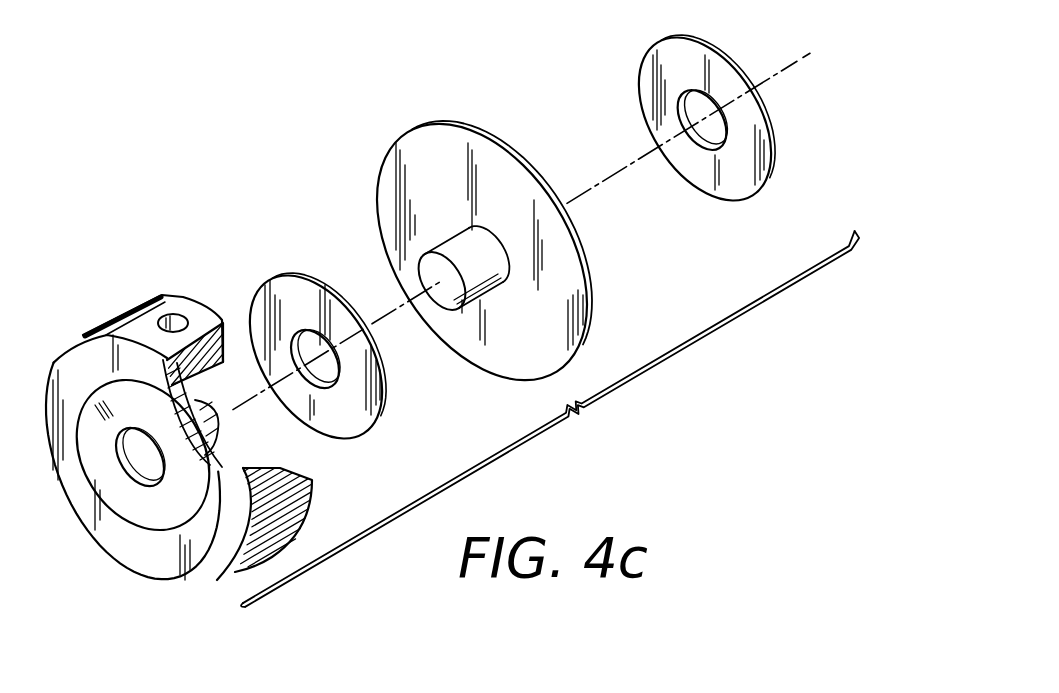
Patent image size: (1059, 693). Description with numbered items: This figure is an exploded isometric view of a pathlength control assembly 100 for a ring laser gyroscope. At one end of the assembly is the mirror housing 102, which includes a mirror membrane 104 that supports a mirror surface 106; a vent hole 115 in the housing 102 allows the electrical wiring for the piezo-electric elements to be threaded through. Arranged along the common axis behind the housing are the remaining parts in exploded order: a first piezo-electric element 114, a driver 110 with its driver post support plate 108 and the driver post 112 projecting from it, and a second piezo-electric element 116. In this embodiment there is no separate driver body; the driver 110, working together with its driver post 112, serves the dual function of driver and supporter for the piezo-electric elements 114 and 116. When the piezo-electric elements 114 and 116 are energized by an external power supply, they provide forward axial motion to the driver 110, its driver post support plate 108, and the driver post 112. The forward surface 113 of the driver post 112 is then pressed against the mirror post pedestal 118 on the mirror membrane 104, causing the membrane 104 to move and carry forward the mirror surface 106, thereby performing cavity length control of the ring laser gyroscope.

The pathlength control assembly 100 is at (550, 419).
The mirror housing 102 is at (108, 318).
The mirror membrane 104 is at (178, 507).
The mirror surface 106 is at (140, 457).
The driver post support plate 108 is at (506, 176).
The driver 110 is at (401, 141).
The driver post 112 is at (462, 250).
The forward surface 113 is at (450, 295).
The piezo-electric element 114 is at (303, 293).
The vent hole 115 is at (177, 318).
The piezo-electric element 116 is at (655, 68).
The mirror post pedestal 118 is at (205, 426).